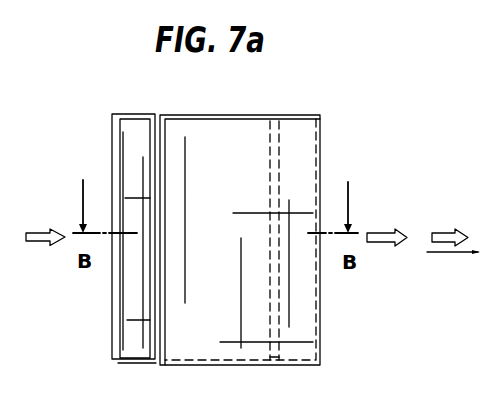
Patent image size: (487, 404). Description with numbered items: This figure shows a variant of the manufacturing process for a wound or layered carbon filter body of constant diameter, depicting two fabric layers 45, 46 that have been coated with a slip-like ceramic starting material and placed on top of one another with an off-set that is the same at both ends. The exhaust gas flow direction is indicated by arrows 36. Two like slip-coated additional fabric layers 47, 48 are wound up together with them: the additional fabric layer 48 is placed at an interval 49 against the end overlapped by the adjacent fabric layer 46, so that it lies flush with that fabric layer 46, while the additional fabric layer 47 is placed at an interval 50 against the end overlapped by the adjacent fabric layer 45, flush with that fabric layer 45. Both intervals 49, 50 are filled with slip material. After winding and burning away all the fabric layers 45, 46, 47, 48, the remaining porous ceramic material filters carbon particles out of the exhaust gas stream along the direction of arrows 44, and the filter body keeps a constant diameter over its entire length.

The exhaust gas flow direction arrows 36 is at (32, 224).
The arrows 44 is at (440, 252).
The fabric layer 45 is at (112, 127).
The fabric layer 46 is at (321, 313).
The additional fabric layer 47 is at (133, 345).
The additional fabric layer 48 is at (298, 348).
The interval 49 is at (278, 370).
The interval 50 is at (157, 118).